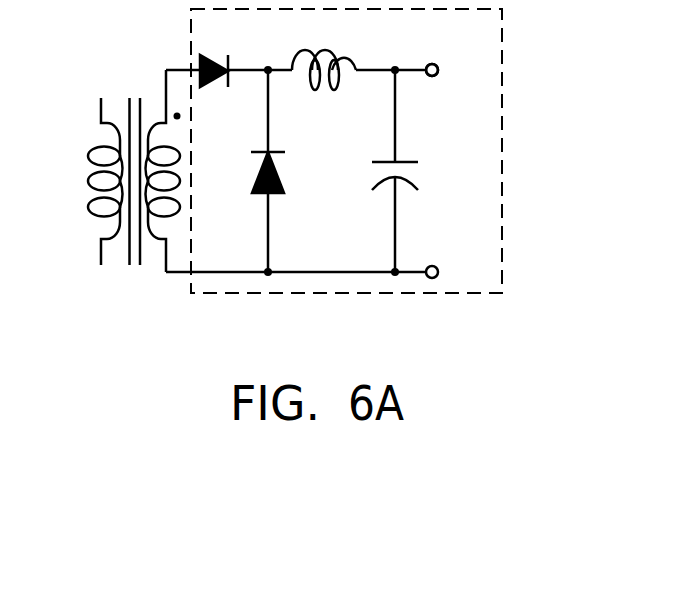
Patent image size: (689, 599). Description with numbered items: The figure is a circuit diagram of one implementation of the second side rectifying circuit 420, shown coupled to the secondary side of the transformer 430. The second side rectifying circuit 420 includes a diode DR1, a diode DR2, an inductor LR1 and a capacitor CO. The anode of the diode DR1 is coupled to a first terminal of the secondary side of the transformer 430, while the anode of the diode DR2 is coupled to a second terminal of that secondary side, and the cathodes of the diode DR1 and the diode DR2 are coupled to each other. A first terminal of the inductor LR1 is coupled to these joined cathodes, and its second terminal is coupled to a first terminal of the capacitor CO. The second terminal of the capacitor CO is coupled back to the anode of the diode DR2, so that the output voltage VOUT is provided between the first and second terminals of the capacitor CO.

The second side rectifying circuit 420 is at (401, 151).
The transformer 430 is at (134, 278).
The diode DR1 is at (215, 50).
The inductor LR1 is at (324, 51).
The diode DR2 is at (294, 171).
The capacitor CO is at (403, 171).
The output voltage VOUT is at (457, 171).